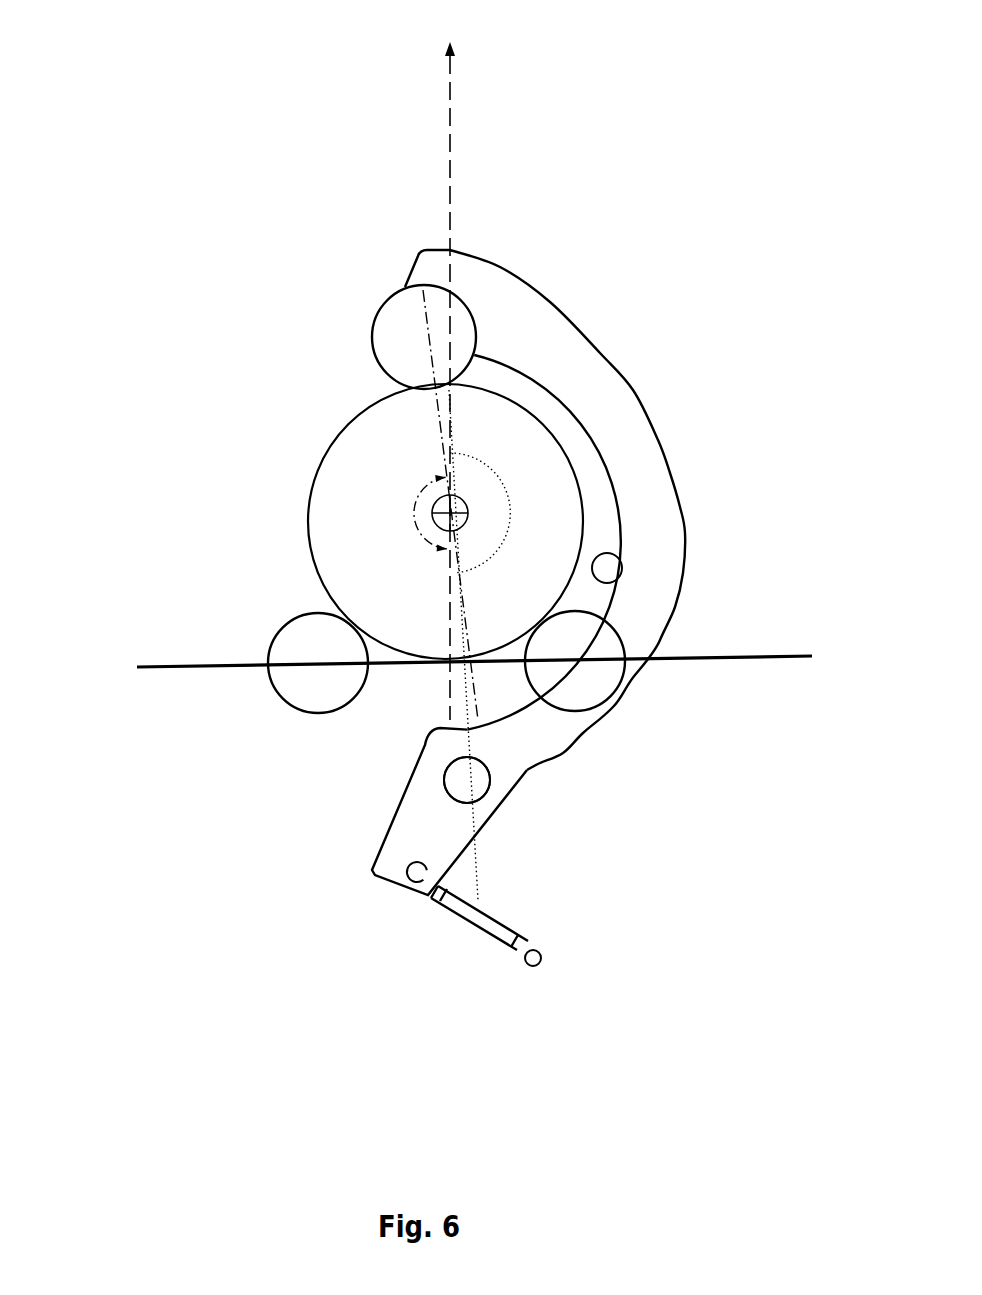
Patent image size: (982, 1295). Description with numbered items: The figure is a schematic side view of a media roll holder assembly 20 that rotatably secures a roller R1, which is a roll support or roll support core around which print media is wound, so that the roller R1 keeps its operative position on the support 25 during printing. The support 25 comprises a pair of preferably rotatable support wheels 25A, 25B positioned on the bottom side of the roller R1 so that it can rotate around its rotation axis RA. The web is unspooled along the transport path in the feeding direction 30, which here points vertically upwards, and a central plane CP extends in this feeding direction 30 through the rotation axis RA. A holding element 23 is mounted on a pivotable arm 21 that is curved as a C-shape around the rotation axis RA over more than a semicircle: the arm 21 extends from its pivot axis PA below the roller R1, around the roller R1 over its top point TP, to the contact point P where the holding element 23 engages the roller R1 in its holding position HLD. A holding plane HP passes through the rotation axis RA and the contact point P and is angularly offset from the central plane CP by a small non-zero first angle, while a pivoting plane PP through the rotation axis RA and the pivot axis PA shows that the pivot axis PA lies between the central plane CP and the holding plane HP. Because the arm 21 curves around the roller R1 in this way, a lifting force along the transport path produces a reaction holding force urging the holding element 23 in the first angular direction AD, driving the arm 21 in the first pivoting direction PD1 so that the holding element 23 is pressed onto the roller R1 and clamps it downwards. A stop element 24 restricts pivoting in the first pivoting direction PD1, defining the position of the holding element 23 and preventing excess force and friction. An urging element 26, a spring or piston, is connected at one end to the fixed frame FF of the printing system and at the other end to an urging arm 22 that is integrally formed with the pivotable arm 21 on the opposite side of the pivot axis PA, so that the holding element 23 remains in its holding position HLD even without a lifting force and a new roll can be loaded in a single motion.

The media roll holder assembly 20 is at (320, 184).
The pivotable arm 21 is at (575, 355).
The urging arm 22 is at (445, 843).
The holding element 23 is at (397, 335).
The stop element 24 is at (608, 568).
The support 25 is at (222, 682).
The support wheel 25A is at (315, 652).
The support wheel 25B is at (575, 652).
The urging element 26 is at (483, 927).
The feeding direction 30 is at (448, 117).
The fixed frame FF is at (542, 957).
The roller R1 is at (340, 545).
The rotation axis RA is at (450, 513).
The holding position HLD is at (350, 318).
The first angular direction AD is at (205, 283).
The first pivoting direction PD1 is at (428, 223).
The central plane CP is at (450, 232).
The top point TP is at (452, 377).
The contact point P is at (430, 388).
The holding plane HP is at (437, 410).
The pivoting plane PP is at (467, 742).
The pivot axis PA is at (457, 780).